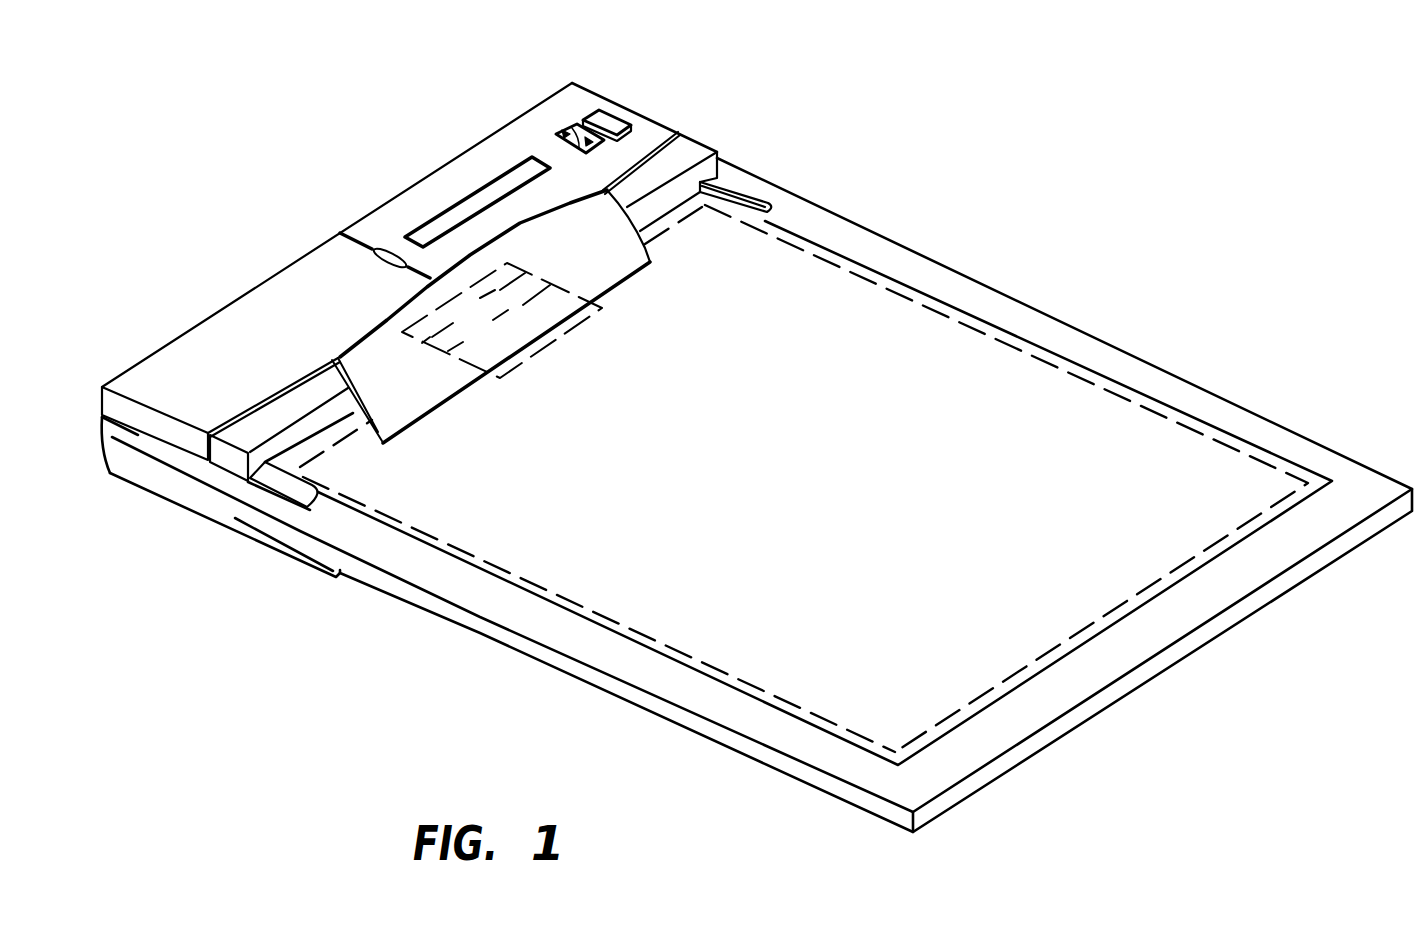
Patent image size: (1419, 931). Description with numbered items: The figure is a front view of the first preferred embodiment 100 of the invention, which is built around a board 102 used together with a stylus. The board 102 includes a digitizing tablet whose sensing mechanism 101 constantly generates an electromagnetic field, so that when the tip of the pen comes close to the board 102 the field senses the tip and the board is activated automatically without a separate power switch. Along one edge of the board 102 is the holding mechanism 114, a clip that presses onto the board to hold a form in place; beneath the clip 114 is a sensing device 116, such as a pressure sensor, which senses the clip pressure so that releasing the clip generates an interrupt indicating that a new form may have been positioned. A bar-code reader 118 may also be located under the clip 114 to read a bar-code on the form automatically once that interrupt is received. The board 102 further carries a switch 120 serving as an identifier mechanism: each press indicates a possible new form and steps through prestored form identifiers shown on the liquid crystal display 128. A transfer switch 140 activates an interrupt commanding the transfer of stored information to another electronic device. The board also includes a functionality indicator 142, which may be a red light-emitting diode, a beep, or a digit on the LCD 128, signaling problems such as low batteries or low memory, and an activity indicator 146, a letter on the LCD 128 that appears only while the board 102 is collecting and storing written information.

The first preferred embodiment 100 is at (1050, 149).
The sensing mechanism 101 is at (1252, 455).
The board 102 is at (1020, 432).
The holding mechanism 114 is at (373, 350).
The sensing device 116 is at (553, 338).
The bar-code reader 118 is at (463, 303).
The switch 120 is at (567, 125).
The liquid crystal display 128 is at (428, 193).
The transfer switch 140 is at (618, 112).
The functionality indicator 142 is at (375, 259).
The activity indicator 146 is at (495, 195).